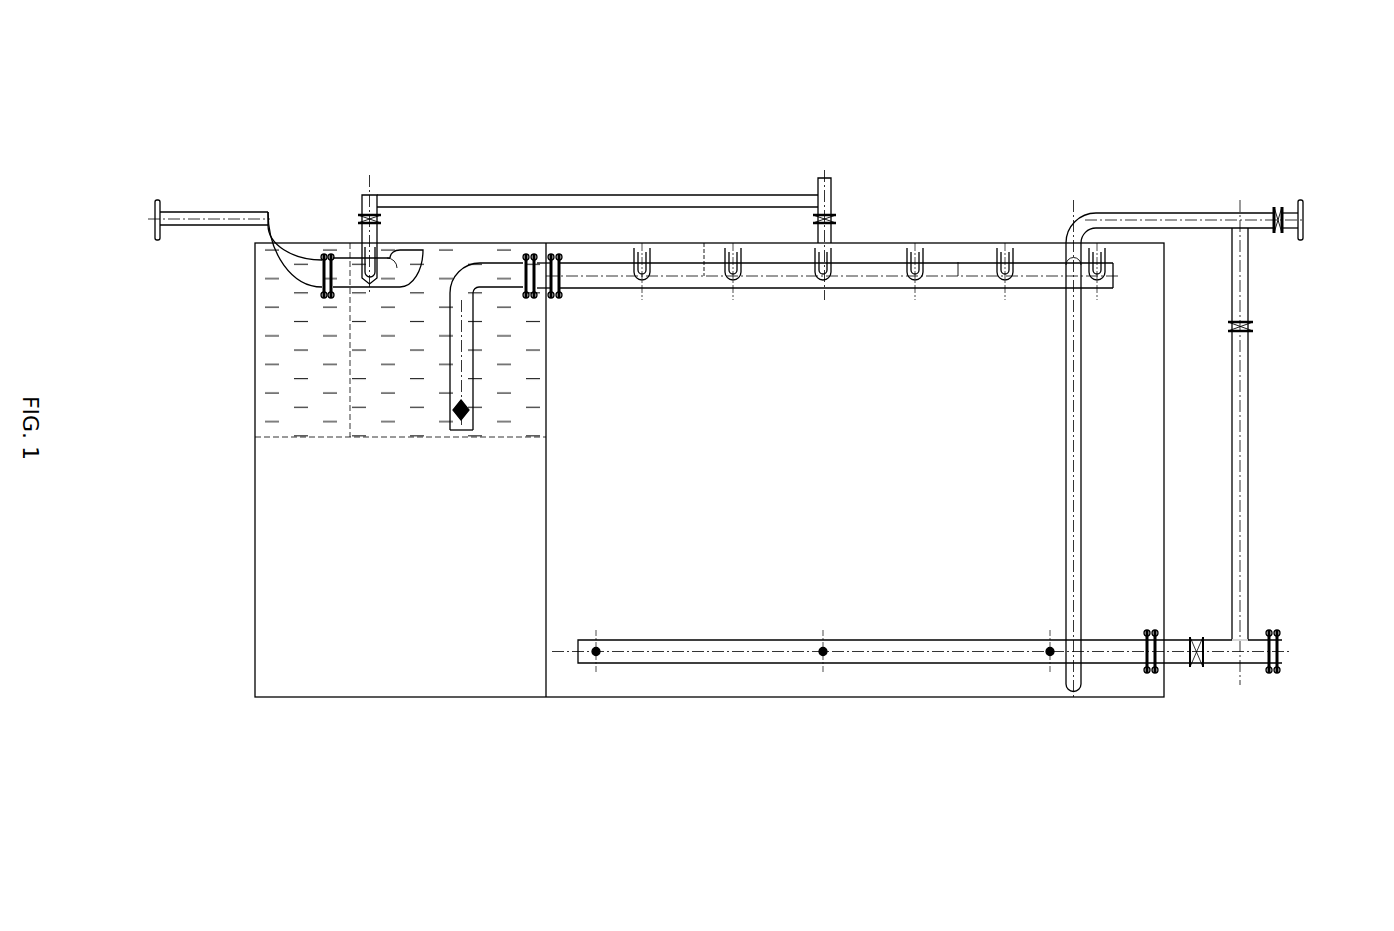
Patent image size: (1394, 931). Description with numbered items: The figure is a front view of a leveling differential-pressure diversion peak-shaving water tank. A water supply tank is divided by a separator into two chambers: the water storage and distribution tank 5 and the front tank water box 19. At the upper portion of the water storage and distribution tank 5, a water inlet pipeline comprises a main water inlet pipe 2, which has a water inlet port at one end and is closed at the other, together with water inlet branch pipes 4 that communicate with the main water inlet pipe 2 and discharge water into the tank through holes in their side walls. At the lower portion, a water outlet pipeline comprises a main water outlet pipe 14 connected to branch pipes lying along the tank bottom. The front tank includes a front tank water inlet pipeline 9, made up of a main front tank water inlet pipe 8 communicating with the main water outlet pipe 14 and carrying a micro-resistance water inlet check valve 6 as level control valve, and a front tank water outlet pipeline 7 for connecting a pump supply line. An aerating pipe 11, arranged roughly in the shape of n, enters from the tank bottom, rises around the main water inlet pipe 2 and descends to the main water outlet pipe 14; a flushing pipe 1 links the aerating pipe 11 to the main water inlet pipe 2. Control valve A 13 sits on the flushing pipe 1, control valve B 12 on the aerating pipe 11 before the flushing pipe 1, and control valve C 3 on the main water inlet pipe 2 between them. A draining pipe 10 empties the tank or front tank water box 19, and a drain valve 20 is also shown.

The flushing pipe 1 is at (1247, 475).
The main water inlet pipe 2 is at (1245, 665).
The control valve C 3 is at (1193, 668).
The water inlet branch pipe 4 is at (1050, 655).
The water storage and distribution tank 5 is at (610, 670).
The micro-resistance water inlet check valve 6 is at (510, 273).
The front tank water outlet pipeline 7 is at (236, 215).
The main front tank water inlet pipe 8 is at (457, 379).
The front tank water inlet pipeline 9 is at (452, 417).
The draining pipe 10 is at (760, 205).
The aerating pipe 11 is at (1155, 213).
The control valve B 12 is at (1275, 208).
The control valve A 13 is at (1250, 333).
The main water outlet pipe 14 is at (973, 280).
The front tank water box 19 is at (317, 628).
The drain valve 20 is at (360, 216).